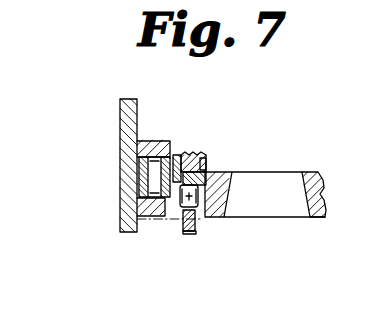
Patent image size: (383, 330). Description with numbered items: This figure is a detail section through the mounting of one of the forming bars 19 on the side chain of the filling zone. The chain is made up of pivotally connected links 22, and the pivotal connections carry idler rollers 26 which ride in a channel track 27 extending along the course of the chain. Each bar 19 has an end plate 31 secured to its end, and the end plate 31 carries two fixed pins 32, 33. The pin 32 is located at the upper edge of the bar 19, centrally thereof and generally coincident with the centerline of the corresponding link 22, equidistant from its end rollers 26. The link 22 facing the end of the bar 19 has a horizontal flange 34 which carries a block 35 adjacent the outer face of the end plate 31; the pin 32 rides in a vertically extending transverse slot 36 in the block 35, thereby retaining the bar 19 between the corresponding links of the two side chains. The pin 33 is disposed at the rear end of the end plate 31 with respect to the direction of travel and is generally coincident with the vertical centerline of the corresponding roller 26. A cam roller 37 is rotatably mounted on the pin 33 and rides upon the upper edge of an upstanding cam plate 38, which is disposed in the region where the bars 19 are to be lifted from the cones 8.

The cone 8 is at (140, 108).
The forming bar 19 is at (320, 190).
The link 22 is at (120, 198).
The idler roller 26 is at (150, 204).
The channel track 27 is at (140, 166).
The end plate 31 is at (204, 163).
The pin 32 is at (207, 172).
The pin 33 is at (176, 207).
The horizontal flange 34 is at (197, 152).
The block 35 is at (178, 152).
The transverse slot 36 is at (233, 185).
The cam roller 37 is at (195, 222).
The cam plate 38 is at (196, 231).